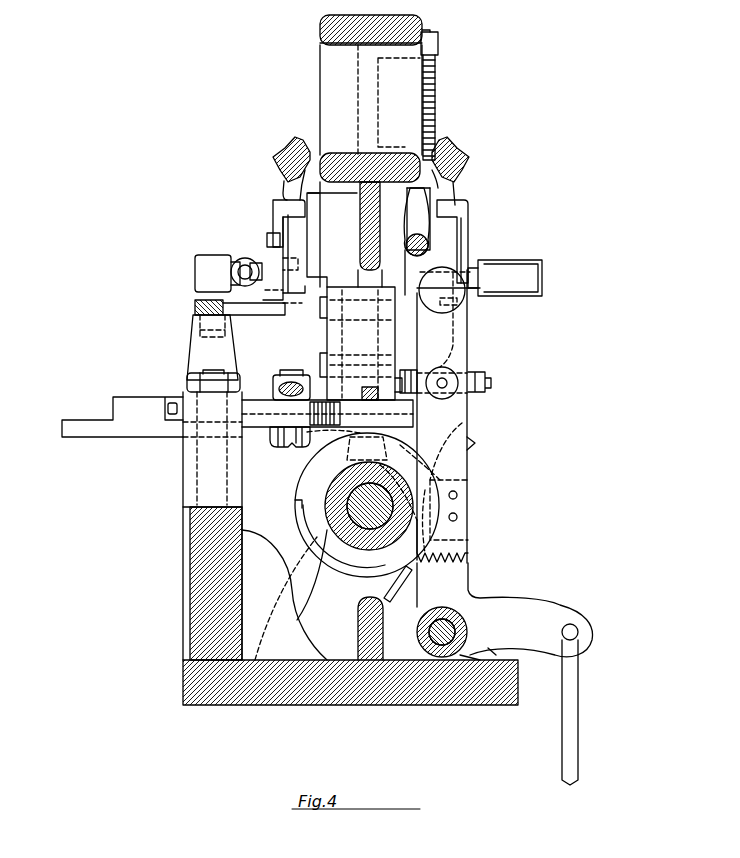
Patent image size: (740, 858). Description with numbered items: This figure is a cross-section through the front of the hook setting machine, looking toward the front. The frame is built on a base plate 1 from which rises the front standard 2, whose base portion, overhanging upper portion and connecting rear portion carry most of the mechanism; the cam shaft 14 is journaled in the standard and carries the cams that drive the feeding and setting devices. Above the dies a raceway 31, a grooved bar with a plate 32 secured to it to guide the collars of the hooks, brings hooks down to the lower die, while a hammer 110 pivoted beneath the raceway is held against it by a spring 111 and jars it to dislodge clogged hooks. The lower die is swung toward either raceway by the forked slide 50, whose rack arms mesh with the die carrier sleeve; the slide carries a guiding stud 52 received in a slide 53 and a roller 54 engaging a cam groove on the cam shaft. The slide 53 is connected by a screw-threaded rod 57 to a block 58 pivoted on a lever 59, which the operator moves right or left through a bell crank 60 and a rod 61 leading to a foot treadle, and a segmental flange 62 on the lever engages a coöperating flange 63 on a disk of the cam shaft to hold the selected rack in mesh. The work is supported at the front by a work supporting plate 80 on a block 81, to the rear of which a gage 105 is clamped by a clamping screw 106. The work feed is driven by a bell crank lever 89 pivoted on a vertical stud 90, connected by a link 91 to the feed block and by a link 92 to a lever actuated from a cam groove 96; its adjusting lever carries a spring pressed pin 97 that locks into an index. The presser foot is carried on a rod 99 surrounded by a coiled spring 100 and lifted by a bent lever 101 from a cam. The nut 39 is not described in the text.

The base plate 1 is at (498, 702).
The front standard 2 is at (360, 232).
The cam shaft 14 is at (350, 503).
The raceway 31 is at (447, 188).
The plate 32 is at (450, 150).
The nut 39 is at (254, 412).
The forked slide 50 is at (407, 418).
The guiding stud 52 is at (370, 400).
The slide 53 is at (347, 390).
The roller 54 is at (392, 437).
The screw-threaded rod 57 is at (491, 383).
The block 58 is at (444, 382).
The lever 59 is at (462, 423).
The bell crank 60 is at (500, 607).
The rod 61 is at (575, 710).
The segmental flange 62 is at (440, 480).
The coöperating flange 63 is at (345, 575).
The work supporting plate 80 is at (522, 262).
The block 81 is at (522, 288).
The bell crank lever 89 is at (197, 345).
The vertical stud 90 is at (200, 375).
The link 91 is at (205, 307).
The link 92 is at (284, 386).
The cam groove 96 is at (128, 430).
The spring pressed pin 97 is at (155, 400).
The vertically reciprocating rod 99 is at (438, 60).
The coiled spring 100 is at (437, 100).
The bent lever 101 is at (420, 229).
The gage 105 is at (258, 237).
The clamping screw 106 is at (231, 270).
The hammer 110 is at (282, 205).
The spring 111 is at (280, 292).